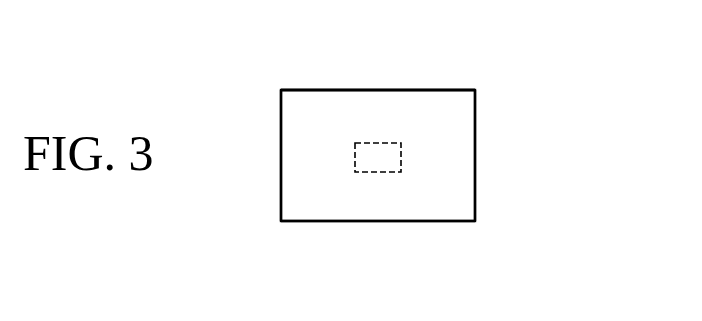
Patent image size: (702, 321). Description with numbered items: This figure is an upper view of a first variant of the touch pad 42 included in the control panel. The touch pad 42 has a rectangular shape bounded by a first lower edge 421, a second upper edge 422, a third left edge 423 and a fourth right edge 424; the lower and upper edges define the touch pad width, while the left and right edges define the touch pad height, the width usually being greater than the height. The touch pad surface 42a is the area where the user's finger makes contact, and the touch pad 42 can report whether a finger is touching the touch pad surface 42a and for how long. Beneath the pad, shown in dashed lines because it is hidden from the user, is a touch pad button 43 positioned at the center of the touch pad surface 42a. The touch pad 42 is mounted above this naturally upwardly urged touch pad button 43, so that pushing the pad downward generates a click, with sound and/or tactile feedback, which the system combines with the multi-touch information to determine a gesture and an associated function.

The touch pad 42 is at (490, 128).
The touch pad surface 42a is at (441, 113).
The touch pad button 43 is at (387, 138).
The first lower edge 421 is at (355, 221).
The second upper edge 422 is at (335, 90).
The third left edge 423 is at (281, 190).
The fourth right edge 424 is at (475, 170).